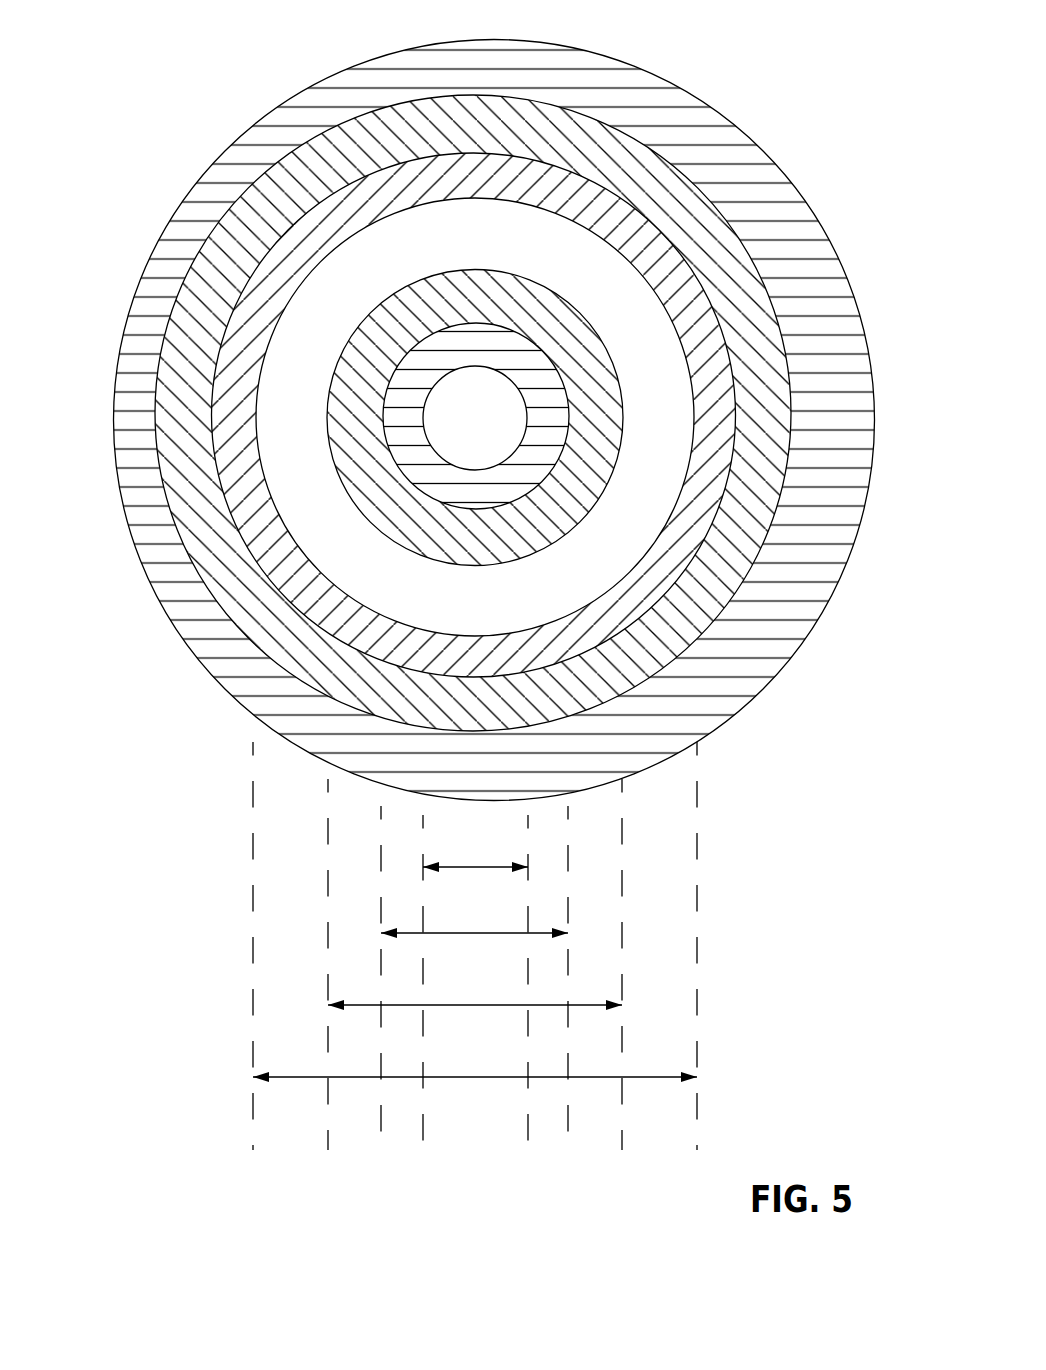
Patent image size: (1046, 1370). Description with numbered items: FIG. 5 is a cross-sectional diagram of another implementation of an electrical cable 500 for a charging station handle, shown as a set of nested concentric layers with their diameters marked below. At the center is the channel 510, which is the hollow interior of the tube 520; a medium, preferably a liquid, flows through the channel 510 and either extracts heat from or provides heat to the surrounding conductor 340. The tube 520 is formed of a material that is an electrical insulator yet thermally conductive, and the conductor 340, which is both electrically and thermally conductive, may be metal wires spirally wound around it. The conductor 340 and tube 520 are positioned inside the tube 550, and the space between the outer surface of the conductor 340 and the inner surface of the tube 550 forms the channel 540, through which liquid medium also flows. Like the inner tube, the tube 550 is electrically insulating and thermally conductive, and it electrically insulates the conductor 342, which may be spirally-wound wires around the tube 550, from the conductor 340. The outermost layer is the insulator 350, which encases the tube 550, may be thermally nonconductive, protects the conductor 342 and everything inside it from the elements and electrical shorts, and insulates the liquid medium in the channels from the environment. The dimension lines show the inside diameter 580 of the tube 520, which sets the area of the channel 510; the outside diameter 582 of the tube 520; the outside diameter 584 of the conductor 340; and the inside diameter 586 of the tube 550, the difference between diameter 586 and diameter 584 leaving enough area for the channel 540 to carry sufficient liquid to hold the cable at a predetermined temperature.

The electrical cable 500 is at (459, 412).
The insulator 350 is at (122, 343).
The conductor 342 is at (460, 713).
The tube 550 is at (463, 672).
The channel 540 is at (461, 593).
The conductor 340 is at (456, 547).
The tube 520 is at (454, 498).
The channel 510 is at (452, 403).
The diameter 580 is at (475, 982).
The diameter 582 is at (474, 978).
The diameter 584 is at (475, 964).
The diameter 586 is at (475, 946).